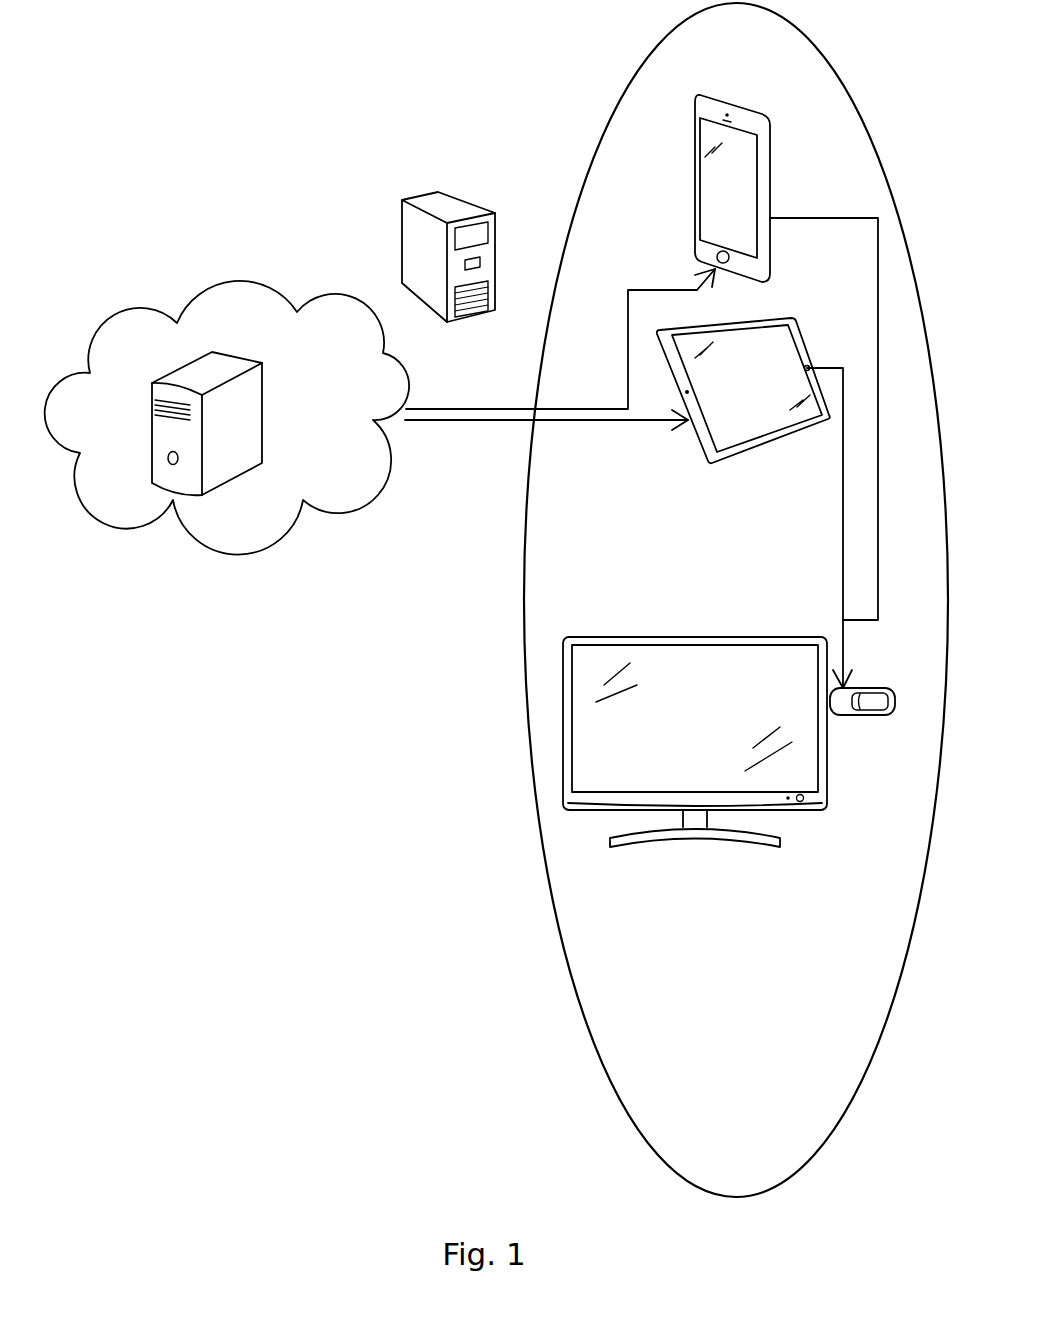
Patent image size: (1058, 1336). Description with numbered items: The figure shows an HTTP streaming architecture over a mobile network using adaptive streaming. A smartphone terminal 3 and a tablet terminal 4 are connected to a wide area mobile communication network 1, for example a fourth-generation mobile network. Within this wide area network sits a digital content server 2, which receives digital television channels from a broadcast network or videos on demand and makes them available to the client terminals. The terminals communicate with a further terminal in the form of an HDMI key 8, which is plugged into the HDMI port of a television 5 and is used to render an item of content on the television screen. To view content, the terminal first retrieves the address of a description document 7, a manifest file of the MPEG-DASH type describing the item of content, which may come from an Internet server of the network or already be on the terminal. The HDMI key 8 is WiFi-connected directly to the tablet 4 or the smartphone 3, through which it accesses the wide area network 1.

The wide area mobile communication network 1 is at (128, 310).
The digital content server 2 is at (233, 358).
The terminal (smartphone) 3 is at (757, 110).
The terminal (tablet) 4 is at (778, 348).
The television 5 is at (640, 778).
The description document (manifest file) 7 is at (457, 205).
The terminal (HDMI key) 8 is at (870, 703).